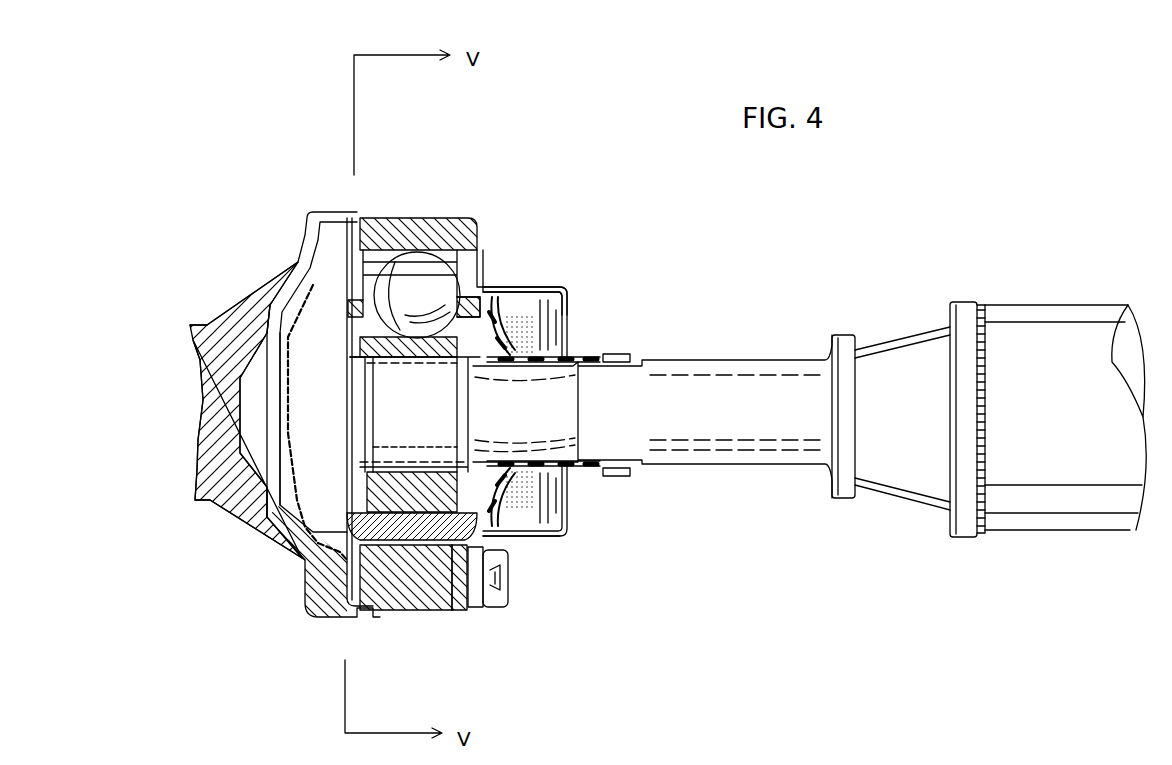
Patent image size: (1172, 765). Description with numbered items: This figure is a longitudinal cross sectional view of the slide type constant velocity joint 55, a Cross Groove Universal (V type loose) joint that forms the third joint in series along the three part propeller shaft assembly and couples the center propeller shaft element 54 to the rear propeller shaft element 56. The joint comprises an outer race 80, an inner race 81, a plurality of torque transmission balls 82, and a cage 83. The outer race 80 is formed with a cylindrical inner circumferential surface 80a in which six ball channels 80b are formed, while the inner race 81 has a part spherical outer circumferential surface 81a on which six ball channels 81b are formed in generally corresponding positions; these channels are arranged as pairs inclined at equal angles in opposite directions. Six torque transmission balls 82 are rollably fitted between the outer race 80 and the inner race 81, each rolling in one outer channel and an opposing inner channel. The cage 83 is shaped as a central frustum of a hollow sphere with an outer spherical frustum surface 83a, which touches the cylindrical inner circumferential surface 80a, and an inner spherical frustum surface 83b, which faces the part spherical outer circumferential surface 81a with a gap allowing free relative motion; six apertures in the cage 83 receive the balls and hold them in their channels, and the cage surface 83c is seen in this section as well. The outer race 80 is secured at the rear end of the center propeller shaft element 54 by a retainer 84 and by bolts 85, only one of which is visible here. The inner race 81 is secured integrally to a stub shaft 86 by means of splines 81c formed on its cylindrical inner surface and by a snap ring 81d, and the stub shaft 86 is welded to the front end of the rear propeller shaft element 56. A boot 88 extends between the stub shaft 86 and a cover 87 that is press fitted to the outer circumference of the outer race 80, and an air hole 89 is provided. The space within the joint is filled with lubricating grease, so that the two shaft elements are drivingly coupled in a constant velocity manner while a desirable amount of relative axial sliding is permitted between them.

The center propeller shaft element 54 is at (205, 347).
The slide type constant velocity joint 55 is at (572, 92).
The rear propeller shaft element 56 is at (1040, 317).
The outer race 80 is at (425, 603).
The cylindrical inner circumferential surface 80a is at (297, 547).
The ball channels 80b is at (483, 270).
The inner race 81 is at (420, 457).
The part spherical outer circumferential surface 81a is at (398, 607).
The ball channels 81b is at (363, 320).
The splines 81c is at (380, 447).
The snap ring 81d is at (347, 358).
The torque transmission balls 82 is at (417, 270).
The cage 83 is at (352, 298).
The outer spherical frustum surface 83a is at (458, 610).
The inner spherical frustum surface 83b is at (390, 212).
The bearing seal 83c is at (470, 262).
The retainer 84 is at (263, 416).
The bolts 85 is at (503, 607).
The stub shaft 86 is at (703, 377).
The cover 87 is at (525, 547).
The boot 88 is at (570, 315).
The air hole 89 is at (610, 350).